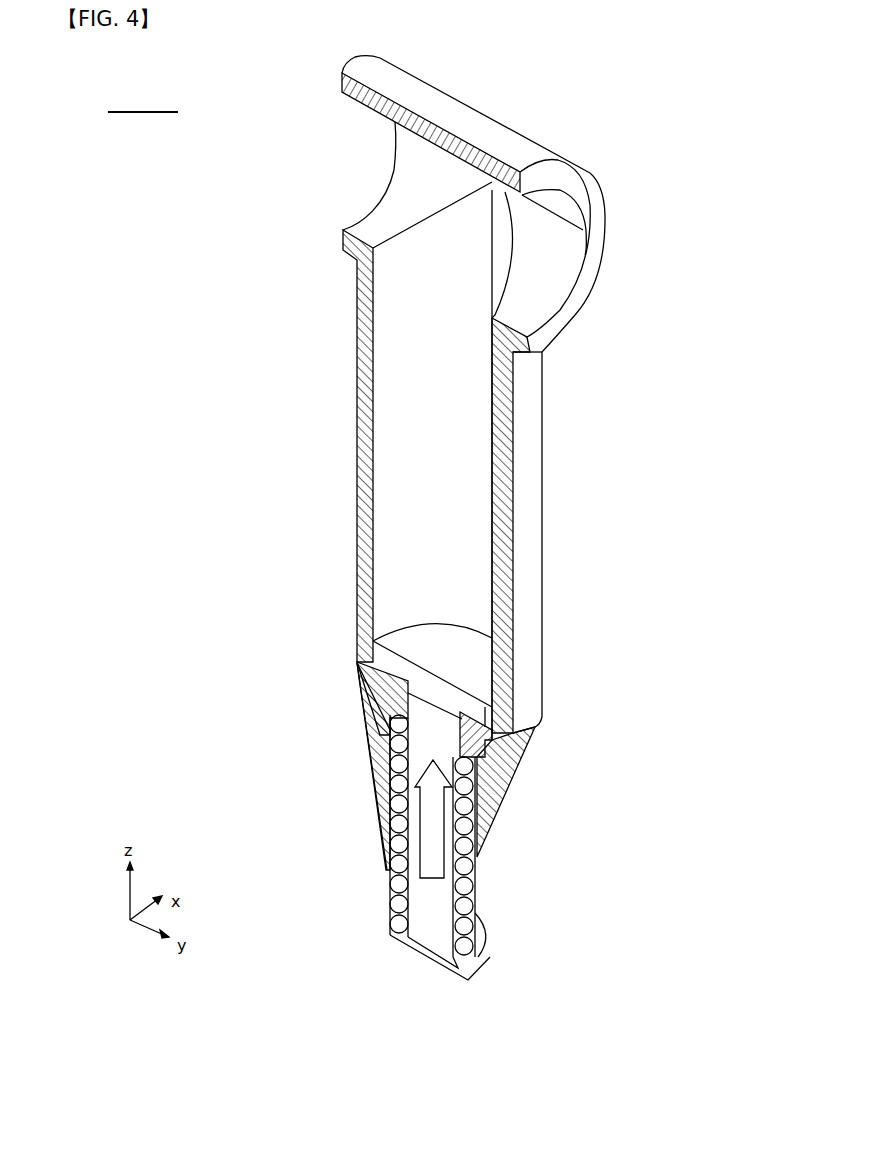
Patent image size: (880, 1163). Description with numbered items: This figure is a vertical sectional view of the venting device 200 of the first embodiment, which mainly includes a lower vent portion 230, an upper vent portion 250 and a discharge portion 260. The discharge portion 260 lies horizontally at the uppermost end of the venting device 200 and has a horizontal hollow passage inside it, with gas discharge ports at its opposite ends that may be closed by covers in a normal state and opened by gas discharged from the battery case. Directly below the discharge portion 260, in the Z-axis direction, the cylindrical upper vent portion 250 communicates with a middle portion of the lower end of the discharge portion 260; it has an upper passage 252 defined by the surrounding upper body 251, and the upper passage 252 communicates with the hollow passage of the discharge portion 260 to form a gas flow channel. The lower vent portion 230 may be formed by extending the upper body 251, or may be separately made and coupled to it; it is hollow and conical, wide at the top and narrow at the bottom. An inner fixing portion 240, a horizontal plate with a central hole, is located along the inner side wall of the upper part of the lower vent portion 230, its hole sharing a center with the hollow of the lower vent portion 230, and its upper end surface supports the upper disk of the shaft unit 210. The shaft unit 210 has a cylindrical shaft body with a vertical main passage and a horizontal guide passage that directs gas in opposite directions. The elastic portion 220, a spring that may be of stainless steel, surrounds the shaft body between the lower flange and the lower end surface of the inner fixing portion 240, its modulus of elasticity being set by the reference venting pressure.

The venting device 200 is at (421, 518).
The shaft unit 210 is at (468, 669).
The elastic portion 220 is at (388, 857).
The lower vent portion 230 is at (372, 742).
The inner fixing portion 240 is at (357, 668).
The upper vent portion 250 is at (538, 398).
The upper body 251 is at (513, 508).
The upper passage 252 is at (445, 478).
The discharge portion 260 is at (590, 287).